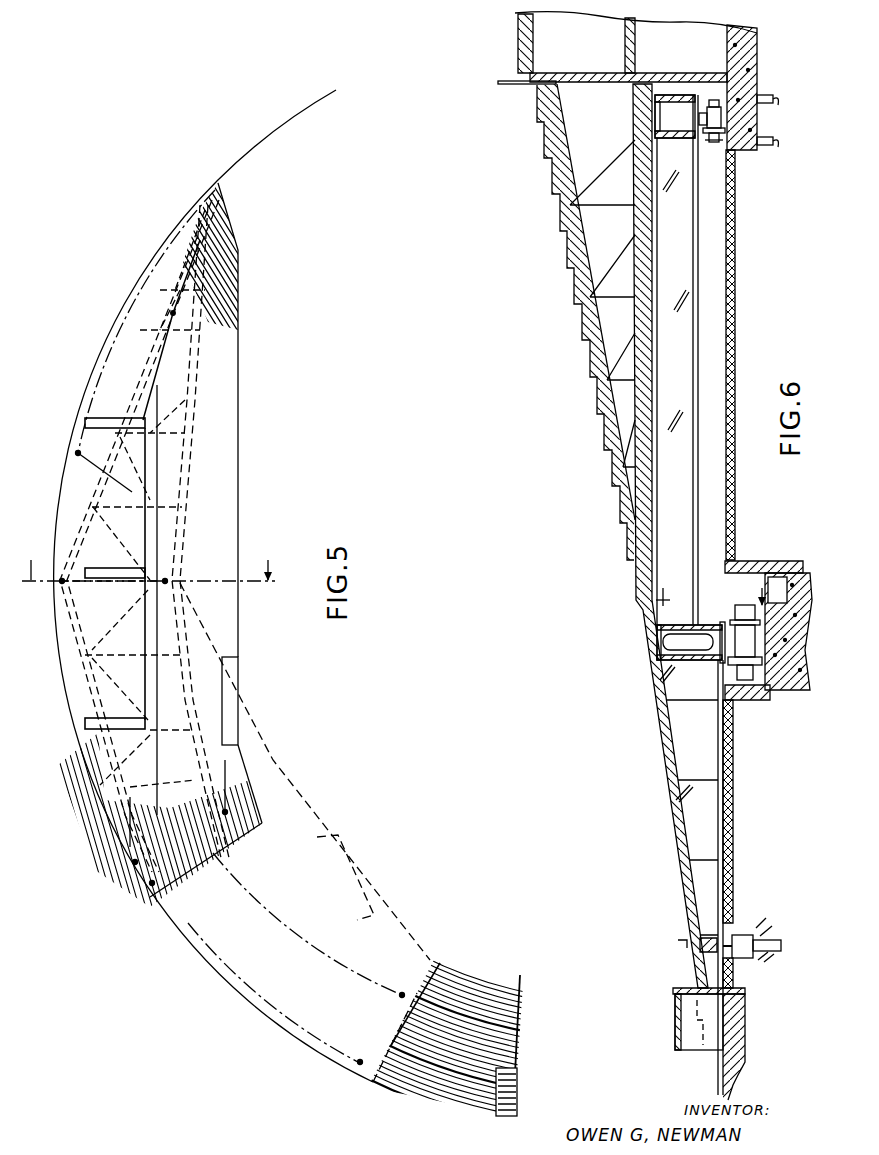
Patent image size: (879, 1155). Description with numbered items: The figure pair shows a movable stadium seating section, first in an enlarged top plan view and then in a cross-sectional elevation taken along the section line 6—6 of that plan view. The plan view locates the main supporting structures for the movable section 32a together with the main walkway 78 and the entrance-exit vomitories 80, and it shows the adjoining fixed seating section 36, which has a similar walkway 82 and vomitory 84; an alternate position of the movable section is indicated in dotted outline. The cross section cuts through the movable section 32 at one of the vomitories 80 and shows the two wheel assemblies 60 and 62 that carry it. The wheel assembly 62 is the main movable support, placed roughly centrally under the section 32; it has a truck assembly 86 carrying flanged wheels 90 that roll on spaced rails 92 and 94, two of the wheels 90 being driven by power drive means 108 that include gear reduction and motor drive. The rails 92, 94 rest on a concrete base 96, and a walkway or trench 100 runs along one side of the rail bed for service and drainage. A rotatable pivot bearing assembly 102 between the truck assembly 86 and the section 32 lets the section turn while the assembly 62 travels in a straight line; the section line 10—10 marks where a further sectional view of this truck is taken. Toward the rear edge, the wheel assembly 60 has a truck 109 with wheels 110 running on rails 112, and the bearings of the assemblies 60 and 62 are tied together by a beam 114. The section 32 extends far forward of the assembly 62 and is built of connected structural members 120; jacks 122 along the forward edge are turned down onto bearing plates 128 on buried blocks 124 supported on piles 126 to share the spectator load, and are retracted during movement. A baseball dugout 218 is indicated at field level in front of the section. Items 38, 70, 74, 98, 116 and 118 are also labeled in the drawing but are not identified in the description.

In FIG. 5, the section line 6— 6 is at (143, 562).
In FIG. 6, the section line 10— 10 is at (715, 584).
In FIG. 6, the movable seating section 32 is at (580, 363).
In FIG. 5, the movable section 32a is at (241, 367).
In FIG. 5, the fixed seating section 36 is at (486, 975).
In FIG. 5, the roof slab 38 is at (95, 856).
In FIG. 6, the roof slab 38 is at (521, 64).
In FIG. 6, the wheel assembly 60 is at (709, 96).
In FIG. 6, the wheel assembly 62 is at (752, 688).
In FIG. 5, the truss frame 70 is at (238, 792).
In FIG. 5, the end member 74 is at (163, 916).
In FIG. 5, the main walkway 78 is at (153, 693).
In FIG. 5, the entrance-exit vomitories 80 is at (84, 401).
In FIG. 6, the entrance-exit vomitories 80 is at (637, 270).
In FIG. 5, the walkway 82 is at (412, 1045).
In FIG. 5, the vomitory 84 is at (500, 1113).
In FIG. 6, the truck assembly 86 is at (785, 682).
In FIG. 6, the wheels 90 is at (728, 660).
In FIG. 6, the rail 92 is at (743, 600).
In FIG. 6, the rail 94 is at (765, 698).
In FIG. 6, the concrete base 96 is at (800, 630).
In FIG. 6, the recess 98 is at (772, 590).
In FIG. 6, the walkway (trench) 100 is at (762, 608).
In FIG. 6, the pivot bearing assembly 102 is at (732, 620).
In FIG. 6, the power drive means 108 is at (694, 587).
In FIG. 6, the truck 109 is at (703, 117).
In FIG. 6, the wheels 110 is at (714, 143).
In FIG. 6, the rails 112 is at (745, 152).
In FIG. 6, the beam 114 is at (688, 404).
In FIG. 6, the concrete block 116 is at (730, 82).
In FIG. 6, the anchor ties 118 is at (786, 118).
In FIG. 6, the structural members 120 is at (672, 842).
In FIG. 6, the jacks 122 is at (716, 954).
In FIG. 6, the blocks 124 is at (748, 928).
In FIG. 6, the piles 126 is at (766, 940).
In FIG. 6, the bearing plates 128 is at (738, 996).
In FIG. 6, the baseball dugout 218 is at (705, 1058).